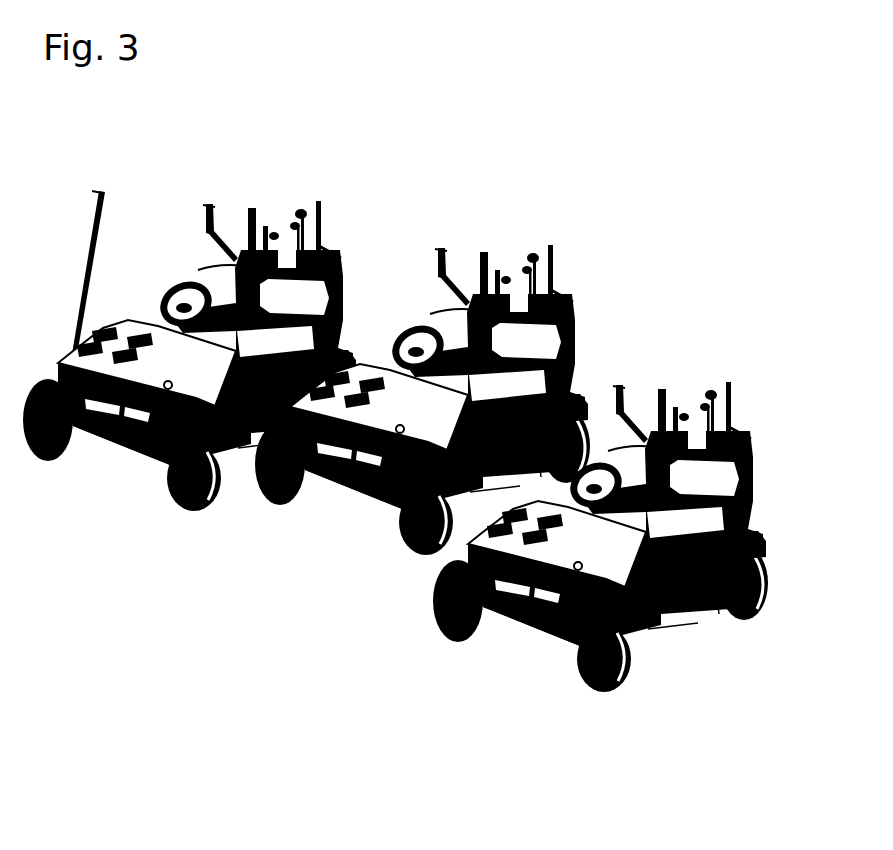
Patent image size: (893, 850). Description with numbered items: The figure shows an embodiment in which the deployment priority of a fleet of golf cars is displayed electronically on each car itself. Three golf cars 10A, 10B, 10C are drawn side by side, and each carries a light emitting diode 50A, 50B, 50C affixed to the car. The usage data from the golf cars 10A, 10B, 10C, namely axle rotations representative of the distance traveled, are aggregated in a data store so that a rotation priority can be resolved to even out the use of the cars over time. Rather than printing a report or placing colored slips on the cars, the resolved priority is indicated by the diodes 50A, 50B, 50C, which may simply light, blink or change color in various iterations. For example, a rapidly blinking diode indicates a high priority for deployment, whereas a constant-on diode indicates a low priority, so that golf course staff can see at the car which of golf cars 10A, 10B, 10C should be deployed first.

The golf car 10A is at (229, 193).
The golf car 10B is at (638, 377).
The golf car 10C is at (462, 247).
The light emitting diode 50A is at (100, 430).
The light emitting diode 50B is at (512, 619).
The light emitting diode 50C is at (333, 487).